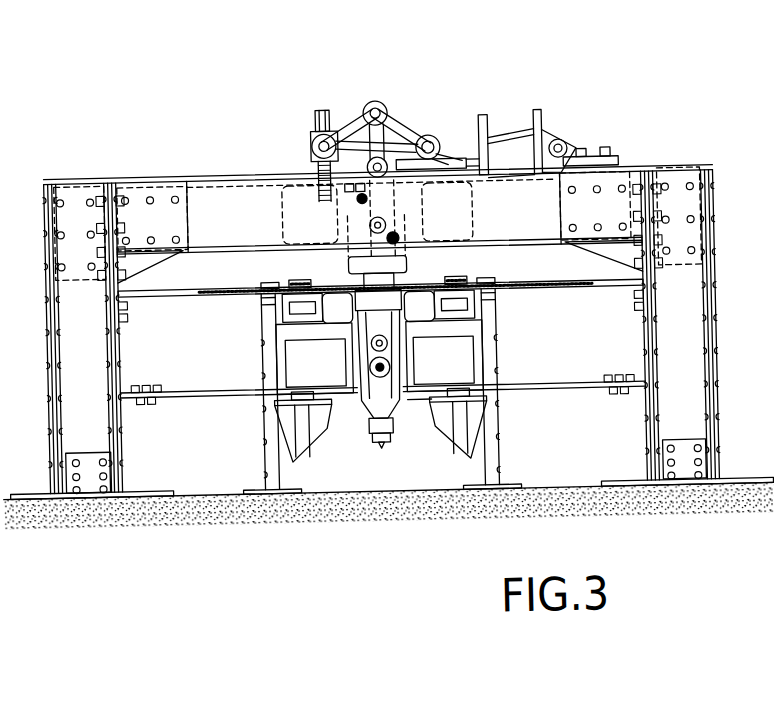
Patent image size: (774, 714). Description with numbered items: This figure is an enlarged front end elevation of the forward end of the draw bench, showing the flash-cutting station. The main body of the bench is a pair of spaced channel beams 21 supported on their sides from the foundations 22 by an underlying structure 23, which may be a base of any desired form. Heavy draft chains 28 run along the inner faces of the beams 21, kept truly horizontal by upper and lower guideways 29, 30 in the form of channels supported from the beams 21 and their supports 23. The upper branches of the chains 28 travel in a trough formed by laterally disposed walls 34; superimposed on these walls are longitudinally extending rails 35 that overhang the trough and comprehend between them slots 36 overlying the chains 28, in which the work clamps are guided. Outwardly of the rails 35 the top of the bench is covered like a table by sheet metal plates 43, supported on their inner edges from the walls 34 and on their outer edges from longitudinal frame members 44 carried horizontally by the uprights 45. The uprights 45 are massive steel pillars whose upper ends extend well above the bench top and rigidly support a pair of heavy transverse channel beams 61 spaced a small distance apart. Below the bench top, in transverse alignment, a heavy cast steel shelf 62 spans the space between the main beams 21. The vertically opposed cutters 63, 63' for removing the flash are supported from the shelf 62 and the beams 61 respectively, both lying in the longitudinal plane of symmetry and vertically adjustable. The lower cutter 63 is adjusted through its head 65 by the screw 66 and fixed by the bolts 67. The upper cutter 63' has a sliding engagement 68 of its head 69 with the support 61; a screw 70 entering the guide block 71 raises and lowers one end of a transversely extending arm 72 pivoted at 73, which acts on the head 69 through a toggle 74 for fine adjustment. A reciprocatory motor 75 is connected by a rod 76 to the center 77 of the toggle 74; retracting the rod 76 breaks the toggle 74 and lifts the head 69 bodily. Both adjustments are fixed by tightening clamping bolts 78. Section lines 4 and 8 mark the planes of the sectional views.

The section line 4- 4 is at (381, 96).
The section line 8- 8 is at (238, 295).
The channel beams 21 is at (270, 347).
The foundations 22 is at (368, 492).
The underlying structure 23 is at (187, 393).
The draft chain 28 is at (272, 303).
The upper guideway 29 is at (440, 322).
The lower guideway 30 is at (396, 399).
The laterally disposed walls 34 is at (350, 279).
The rails 35 is at (300, 283).
The slots 36 is at (292, 289).
The sheet metal plates 43 is at (160, 292).
The frame members 44 is at (128, 318).
The uprights 45 is at (92, 373).
The transverse channel beams 61 is at (250, 177).
The cast steel shelf 62 is at (315, 363).
The lower cutter 63 is at (384, 245).
The upper cutter 63' is at (421, 359).
The head of lower cutter 65 is at (390, 433).
The screw 66 is at (393, 441).
The bolts 67 is at (361, 397).
The sliding engagement 68 is at (402, 237).
The head of upper cutter 69 is at (347, 188).
The screw 70 is at (320, 132).
The guide block 71 is at (306, 174).
The transversely extending arm 72 is at (392, 160).
The pivot 73 is at (434, 136).
The toggle 74 is at (364, 104).
The reciprocatory motor 75 is at (520, 138).
The rod 76 is at (468, 158).
The toggle center 77 is at (405, 140).
The clamping bolts 78 is at (358, 202).